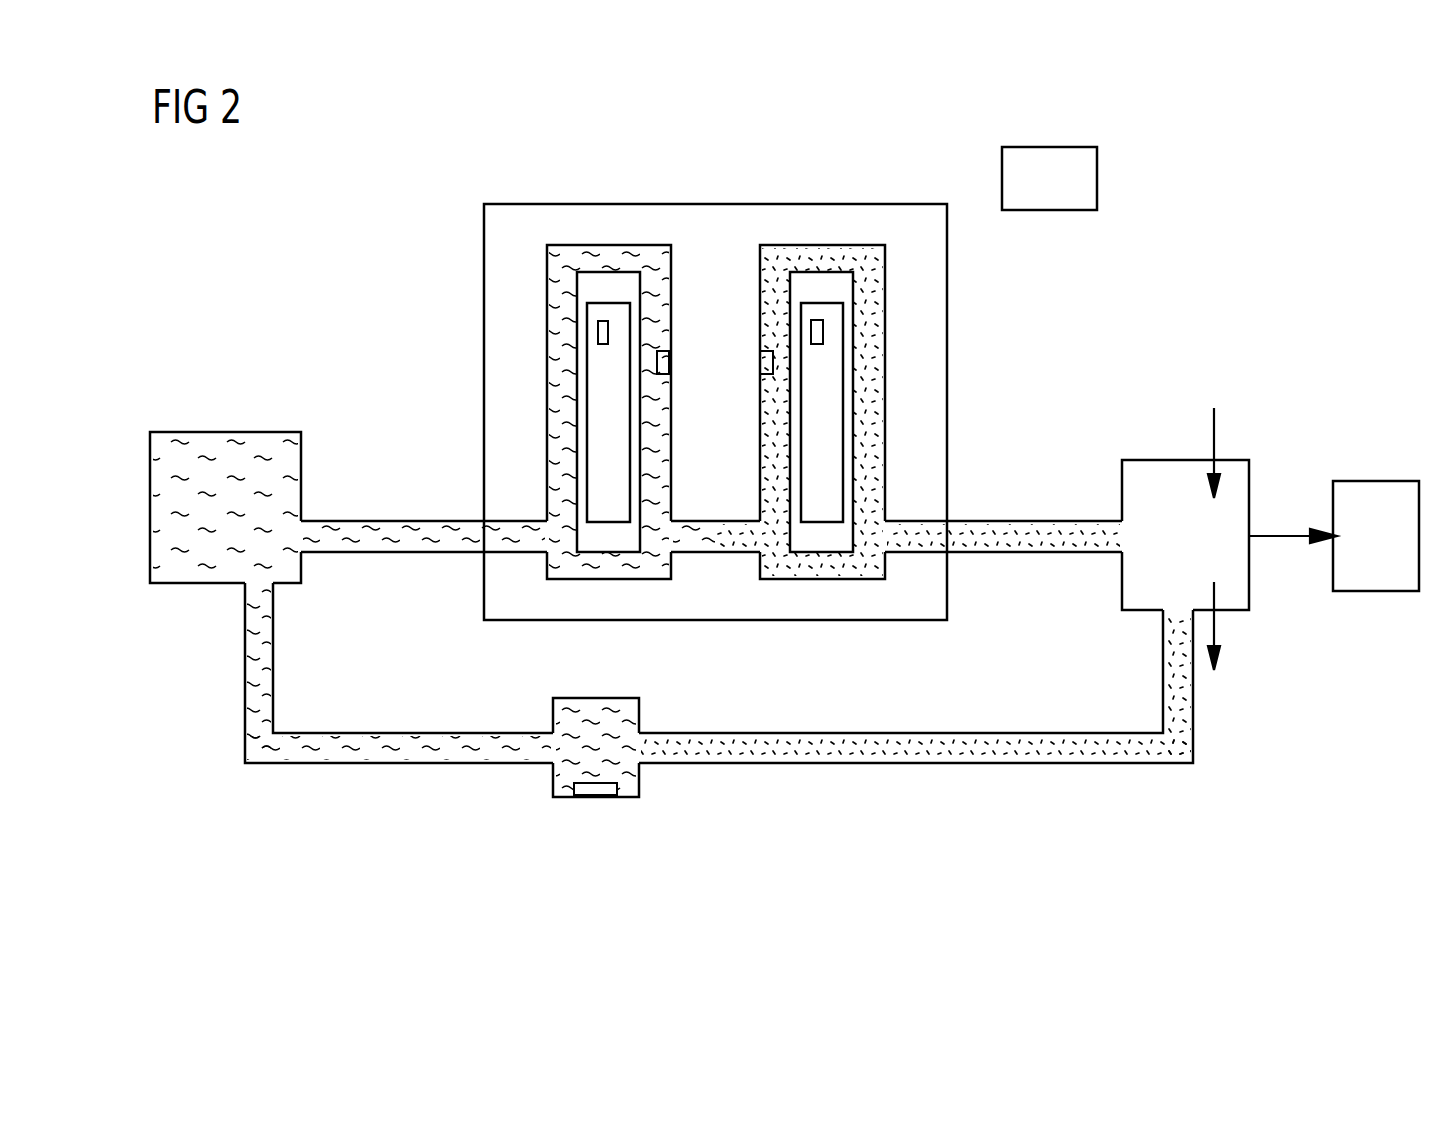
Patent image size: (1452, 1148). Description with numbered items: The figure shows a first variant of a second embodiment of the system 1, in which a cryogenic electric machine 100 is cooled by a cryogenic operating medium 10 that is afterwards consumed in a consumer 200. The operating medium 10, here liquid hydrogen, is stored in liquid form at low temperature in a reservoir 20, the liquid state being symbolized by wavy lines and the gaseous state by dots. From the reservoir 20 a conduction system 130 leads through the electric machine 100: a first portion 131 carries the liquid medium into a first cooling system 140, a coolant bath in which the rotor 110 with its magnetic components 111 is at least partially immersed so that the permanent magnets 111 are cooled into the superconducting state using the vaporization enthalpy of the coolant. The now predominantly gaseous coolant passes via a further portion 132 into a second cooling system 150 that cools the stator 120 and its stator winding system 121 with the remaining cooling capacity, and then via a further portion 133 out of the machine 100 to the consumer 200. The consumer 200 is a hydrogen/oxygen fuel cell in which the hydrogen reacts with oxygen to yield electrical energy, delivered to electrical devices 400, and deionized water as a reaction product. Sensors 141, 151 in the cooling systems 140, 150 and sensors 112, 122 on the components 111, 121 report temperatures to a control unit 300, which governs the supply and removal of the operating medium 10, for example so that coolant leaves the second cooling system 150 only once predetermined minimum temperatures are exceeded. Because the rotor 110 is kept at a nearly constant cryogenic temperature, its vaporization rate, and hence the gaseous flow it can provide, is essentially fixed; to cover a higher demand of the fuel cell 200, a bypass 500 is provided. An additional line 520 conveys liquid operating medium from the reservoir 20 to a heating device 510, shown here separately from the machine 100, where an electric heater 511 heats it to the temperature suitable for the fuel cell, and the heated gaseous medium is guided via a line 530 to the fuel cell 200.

The system 1 is at (327, 259).
The operating medium 10 is at (1085, 742).
The reservoir 20 is at (190, 432).
The cryogenic electric machine 100 is at (715, 202).
The rotor 110 is at (577, 287).
The magnetic components 111 is at (595, 407).
The sensor 112 is at (598, 333).
The stator 120 is at (853, 285).
The stator winding system 121 is at (830, 408).
The sensor 122 is at (818, 333).
The conduction system 130 is at (711, 537).
The portion of the conduction system 131 is at (525, 512).
The portion of the conduction system 132 is at (713, 512).
The portion of the conduction system 133 is at (913, 512).
The first cooling system 140 is at (633, 580).
The sensor 141 is at (669, 363).
The second cooling system 150 is at (848, 575).
The temperature sensor 151 is at (768, 357).
The consumer 200 is at (1162, 460).
The control unit 300 is at (1050, 145).
The electrical devices 400 is at (1380, 481).
The bypass 500 is at (719, 750).
The heating device 510 is at (553, 788).
The electric heater 511 is at (595, 797).
The additional line 520 is at (397, 765).
The line 530 is at (848, 765).